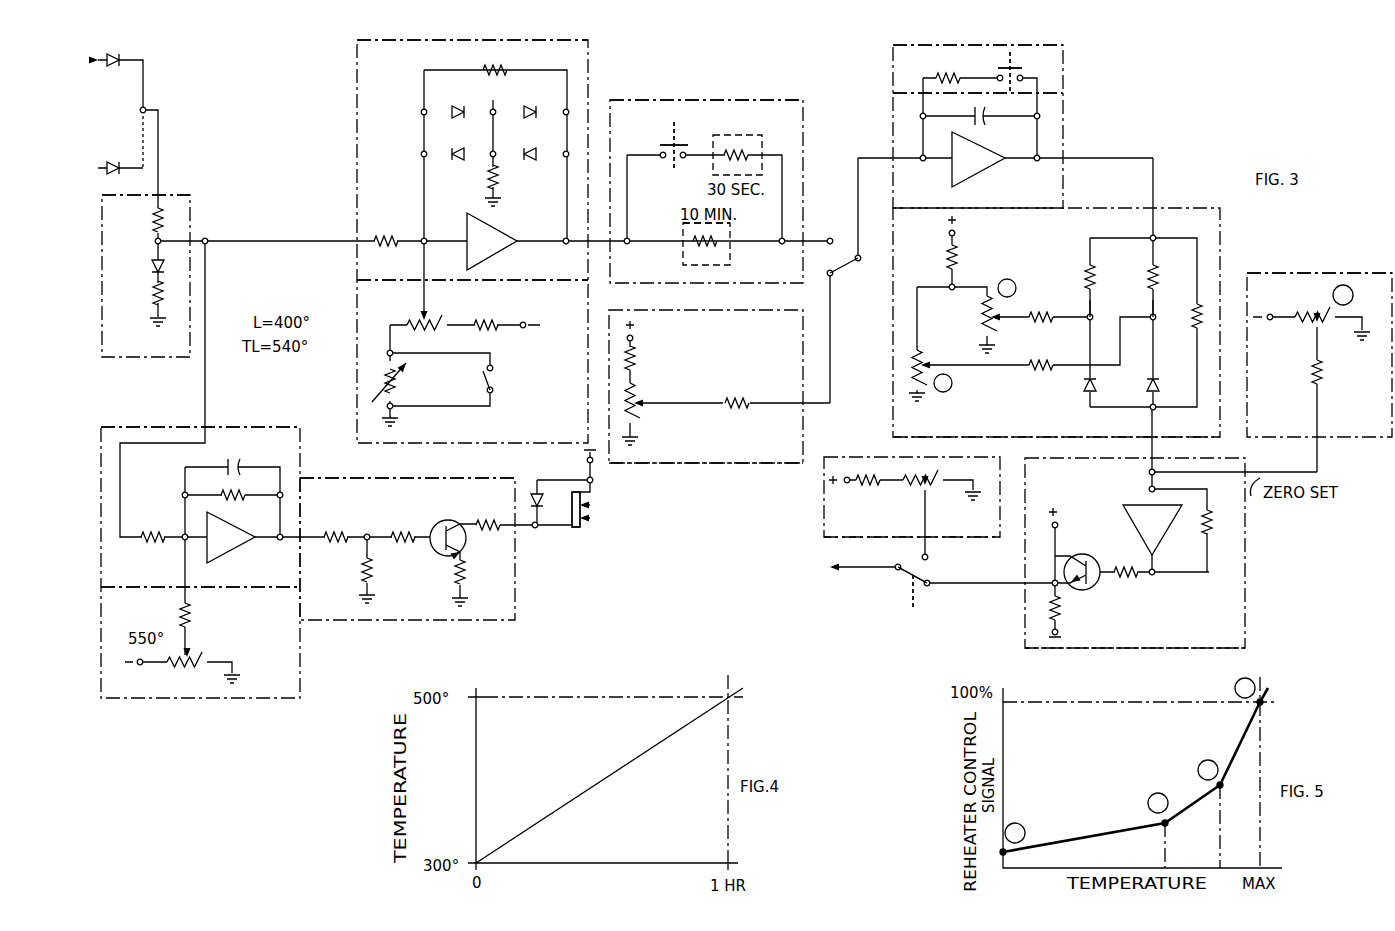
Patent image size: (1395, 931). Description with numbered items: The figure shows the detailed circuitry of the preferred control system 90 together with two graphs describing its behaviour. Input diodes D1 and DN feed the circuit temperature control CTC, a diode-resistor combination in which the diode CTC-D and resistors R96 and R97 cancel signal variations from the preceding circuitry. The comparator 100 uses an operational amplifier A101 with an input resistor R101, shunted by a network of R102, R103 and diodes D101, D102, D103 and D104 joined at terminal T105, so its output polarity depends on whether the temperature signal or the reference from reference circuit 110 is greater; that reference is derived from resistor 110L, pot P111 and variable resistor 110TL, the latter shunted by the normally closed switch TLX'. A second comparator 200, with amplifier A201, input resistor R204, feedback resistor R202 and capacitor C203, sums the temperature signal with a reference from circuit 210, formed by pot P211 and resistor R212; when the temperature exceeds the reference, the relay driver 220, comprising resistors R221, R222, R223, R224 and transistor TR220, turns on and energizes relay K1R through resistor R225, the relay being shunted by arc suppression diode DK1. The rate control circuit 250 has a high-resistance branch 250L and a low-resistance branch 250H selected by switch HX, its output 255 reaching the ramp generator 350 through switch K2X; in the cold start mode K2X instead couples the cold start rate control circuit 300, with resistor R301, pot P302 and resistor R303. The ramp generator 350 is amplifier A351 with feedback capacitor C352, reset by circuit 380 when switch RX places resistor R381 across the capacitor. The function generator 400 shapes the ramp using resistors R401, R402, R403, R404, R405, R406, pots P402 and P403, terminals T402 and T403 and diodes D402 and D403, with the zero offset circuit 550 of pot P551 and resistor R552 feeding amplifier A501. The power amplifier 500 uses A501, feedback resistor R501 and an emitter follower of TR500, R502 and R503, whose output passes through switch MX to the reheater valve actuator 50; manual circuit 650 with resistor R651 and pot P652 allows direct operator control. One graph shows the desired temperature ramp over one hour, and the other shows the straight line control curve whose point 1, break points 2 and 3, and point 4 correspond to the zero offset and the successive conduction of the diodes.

In FIG. 3, the diode D1 is at (118, 52).
In FIG. 3, the diode DN is at (112, 175).
In FIG. 3, the circuit temperature control CTC is at (172, 196).
In FIG. 3, the resistor R96 is at (150, 222).
In FIG. 3, the diode CTC-D is at (133, 265).
In FIG. 3, the resistor R97 is at (150, 293).
In FIG. 3, the comparator 100 is at (357, 46).
In FIG. 3, the input resistor R101 is at (388, 238).
In FIG. 3, the resistor R102 is at (489, 67).
In FIG. 3, the diode D101 is at (455, 106).
In FIG. 3, the terminal T105 is at (490, 95).
In FIG. 3, the diode D102 is at (530, 106).
In FIG. 3, the diode D103 is at (453, 143).
In FIG. 3, the diode D104 is at (538, 143).
In FIG. 3, the resistor R103 is at (500, 178).
In FIG. 3, the operational amplifier A101 is at (520, 230).
In FIG. 3, the reference circuit 110 is at (357, 284).
In FIG. 3, the pot P111 is at (418, 320).
In FIG. 3, the resistor 110L is at (488, 320).
In FIG. 3, the variable resistor 110TL is at (398, 392).
In FIG. 3, the normally closed switch TLX' is at (515, 376).
In FIG. 3, the rate control circuit 250 is at (666, 97).
In FIG. 3, the switch HX is at (660, 152).
In FIG. 3, the upper branch resistor 250H is at (762, 135).
In FIG. 3, the lower branch resistor 250L is at (683, 238).
In FIG. 3, the rate control output 255 is at (782, 246).
In FIG. 3, the switch K2X is at (843, 262).
In FIG. 3, the cold start rate control circuit 300 is at (852, 432).
In FIG. 3, the resistor R301 is at (637, 356).
In FIG. 3, the pot P302 is at (638, 400).
In FIG. 3, the resistor R303 is at (727, 398).
In FIG. 3, the reset circuit 380 is at (1112, 78).
In FIG. 3, the ramp generator 350 is at (1112, 111).
In FIG. 3, the resistor R381 is at (948, 72).
In FIG. 3, the reset switch RX is at (997, 74).
In FIG. 3, the feedback capacitor C352 is at (983, 128).
In FIG. 3, the operational amplifier A351 is at (980, 172).
In FIG. 3, the function generator 400 is at (1244, 205).
In FIG. 3, the resistor R404 is at (958, 258).
In FIG. 3, the resistor R403 is at (1087, 273).
In FIG. 3, the resistor R402 is at (1147, 272).
In FIG. 3, the terminal T403 is at (1088, 315).
In FIG. 3, the terminal point T402 is at (1150, 317).
In FIG. 3, the resistor R401 is at (1193, 316).
In FIG. 3, the pot P403 is at (982, 318).
In FIG. 3, the pot P402 is at (930, 356).
In FIG. 3, the resistor R405 is at (1052, 323).
In FIG. 3, the resistor R406 is at (1033, 362).
In FIG. 3, the diode D403 is at (1080, 388).
In FIG. 3, the diode D402 is at (1162, 388).
In FIG. 3, the zero offset circuit 550 is at (1306, 273).
In FIG. 3, the pot P551 is at (1312, 328).
In FIG. 3, the resistor R552 is at (1326, 371).
In FIG. 3, the power amplifier 500 is at (1296, 543).
In FIG. 3, the operational amplifier A501 is at (1124, 508).
In FIG. 3, the transistor TR500 is at (1083, 552).
In FIG. 3, the resistor R502 is at (1125, 567).
In FIG. 3, the feedback resistor R501 is at (1204, 535).
In FIG. 3, the resistor R503 is at (1062, 611).
In FIG. 3, the manual control circuit 650 is at (823, 511).
In FIG. 3, the resistor R651 is at (880, 485).
In FIG. 3, the potentiometer P652 is at (929, 478).
In FIG. 3, the switch MX is at (922, 573).
In FIG. 3, the reheater valve actuator 50 is at (830, 570).
In FIG. 3, the control system 90 is at (853, 613).
In FIG. 3, the comparator 200 is at (175, 426).
In FIG. 3, the reference circuit 210 is at (356, 649).
In FIG. 3, the relay driver 220 is at (410, 477).
In FIG. 3, the capacitor C203 is at (232, 460).
In FIG. 3, the resistor R202 is at (226, 488).
In FIG. 3, the resistor R204 is at (164, 547).
In FIG. 3, the operational amplifier A201 is at (222, 552).
In FIG. 3, the resistor R212 is at (193, 619).
In FIG. 3, the pot P211 is at (205, 653).
In FIG. 3, the resistor R221 is at (336, 533).
In FIG. 3, the resistor R222 is at (362, 578).
In FIG. 3, the resistor R223 is at (400, 534).
In FIG. 3, the transistor TR220 is at (450, 557).
In FIG. 3, the resistor R225 is at (488, 520).
In FIG. 3, the resistor R224 is at (464, 566).
In FIG. 3, the arc suppression diode DK1 is at (533, 500).
In FIG. 3, the relay K1R is at (592, 512).
In FIG. 3, the point one 1 is at (1343, 295).
In FIG. 5, the point one 1 is at (1015, 833).
In FIG. 3, the break point 2 is at (943, 383).
In FIG. 5, the break point 2 is at (1158, 803).
In FIG. 3, the break point 3 is at (1007, 288).
In FIG. 5, the break point 3 is at (1208, 770).
In FIG. 5, the point four 4 is at (1245, 688).